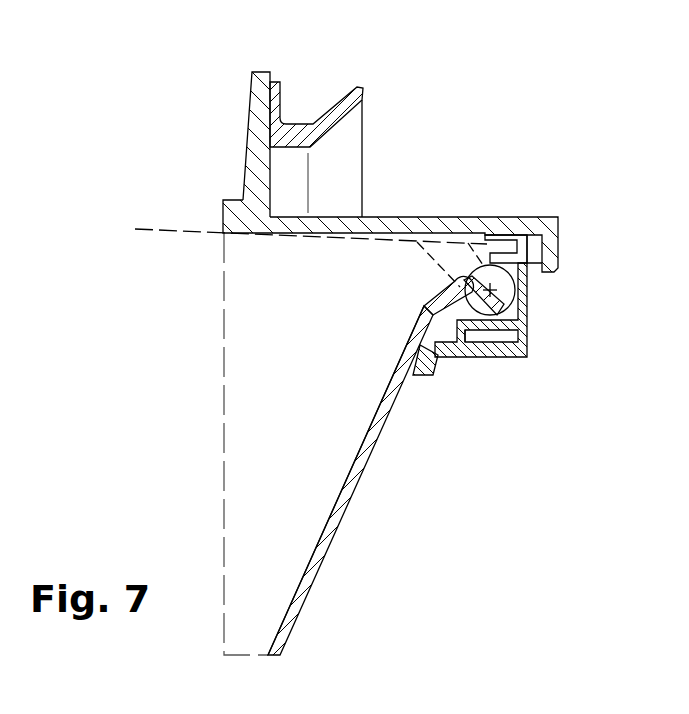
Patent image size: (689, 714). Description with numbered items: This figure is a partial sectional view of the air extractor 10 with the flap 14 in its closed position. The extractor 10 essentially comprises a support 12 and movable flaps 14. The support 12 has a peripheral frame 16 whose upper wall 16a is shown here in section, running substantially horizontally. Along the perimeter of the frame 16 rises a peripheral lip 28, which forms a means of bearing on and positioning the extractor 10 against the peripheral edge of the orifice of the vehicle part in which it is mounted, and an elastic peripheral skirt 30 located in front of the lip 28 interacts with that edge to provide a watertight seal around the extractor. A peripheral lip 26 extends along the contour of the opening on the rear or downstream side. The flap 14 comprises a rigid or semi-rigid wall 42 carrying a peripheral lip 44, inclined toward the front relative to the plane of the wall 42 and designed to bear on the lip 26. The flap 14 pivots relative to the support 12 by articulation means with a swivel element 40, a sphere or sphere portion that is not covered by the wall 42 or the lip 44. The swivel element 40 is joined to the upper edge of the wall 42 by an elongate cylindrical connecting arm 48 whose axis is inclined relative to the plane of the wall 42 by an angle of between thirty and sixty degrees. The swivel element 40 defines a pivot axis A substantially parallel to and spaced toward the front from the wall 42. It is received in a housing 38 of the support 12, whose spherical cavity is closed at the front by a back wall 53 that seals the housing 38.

The air extractor 10 is at (505, 162).
The support 12 is at (237, 132).
The flap 14 is at (343, 470).
The peripheral frame 16 is at (223, 220).
The upper wall 16a is at (427, 217).
The peripheral lip 26 is at (413, 377).
The peripheral lip 28 is at (263, 72).
The elastic peripheral skirt 30 is at (330, 118).
The housing 38 is at (507, 365).
The swivel element 40 is at (505, 300).
The wall 42 is at (333, 510).
The peripheral lip 44 is at (445, 292).
The connecting arm 48 is at (465, 343).
The back wall 53 is at (525, 334).
The axis of pivoting A is at (505, 268).